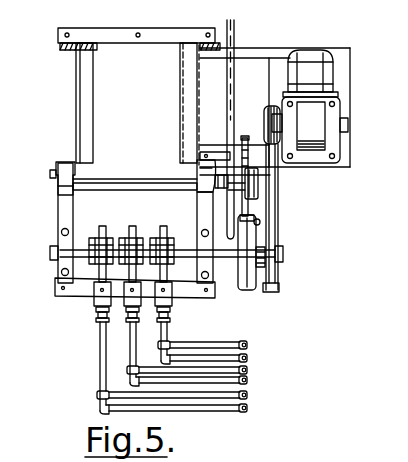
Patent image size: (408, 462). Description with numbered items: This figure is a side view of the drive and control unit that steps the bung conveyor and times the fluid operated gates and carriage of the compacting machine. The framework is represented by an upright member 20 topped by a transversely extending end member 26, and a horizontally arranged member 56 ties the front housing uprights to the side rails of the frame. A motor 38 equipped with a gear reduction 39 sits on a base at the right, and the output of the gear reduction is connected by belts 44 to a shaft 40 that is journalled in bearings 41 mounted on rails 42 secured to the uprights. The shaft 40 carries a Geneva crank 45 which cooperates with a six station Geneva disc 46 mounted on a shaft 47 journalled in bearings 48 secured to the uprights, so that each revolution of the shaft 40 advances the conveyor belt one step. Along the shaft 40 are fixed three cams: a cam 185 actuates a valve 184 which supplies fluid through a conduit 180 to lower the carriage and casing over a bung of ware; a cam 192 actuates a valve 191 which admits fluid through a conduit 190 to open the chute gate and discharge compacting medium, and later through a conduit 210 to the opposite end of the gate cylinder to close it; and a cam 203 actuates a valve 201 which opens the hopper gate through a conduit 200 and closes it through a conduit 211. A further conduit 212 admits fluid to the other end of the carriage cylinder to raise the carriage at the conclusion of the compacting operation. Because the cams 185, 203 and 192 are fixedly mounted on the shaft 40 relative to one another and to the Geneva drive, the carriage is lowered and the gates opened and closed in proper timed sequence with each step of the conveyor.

The upright member 20 is at (74, 56).
The end member 26 is at (163, 37).
The motor 38 is at (313, 58).
The gear reduction 39 is at (310, 130).
The shaft 40 is at (188, 249).
The bearing 41 is at (63, 258).
The rail 42 is at (68, 201).
The belt 44 is at (272, 201).
The Geneva crank 45 is at (260, 222).
The Geneva disc 46 is at (245, 137).
The shaft 47 is at (106, 182).
The bearing 48 is at (62, 191).
The horizontally arranged member 56 is at (227, 137).
The conduit 180 is at (250, 394).
The valve 184 is at (98, 303).
The cam 185 is at (104, 236).
The conduit 190 is at (246, 342).
The valve 191 is at (174, 299).
The cam 192 is at (166, 238).
The conduit 200 is at (249, 368).
The valve 201 is at (126, 300).
The cam 203 is at (135, 240).
The conduit 210 is at (199, 354).
The conduit 211 is at (249, 381).
The conduit 212 is at (249, 410).